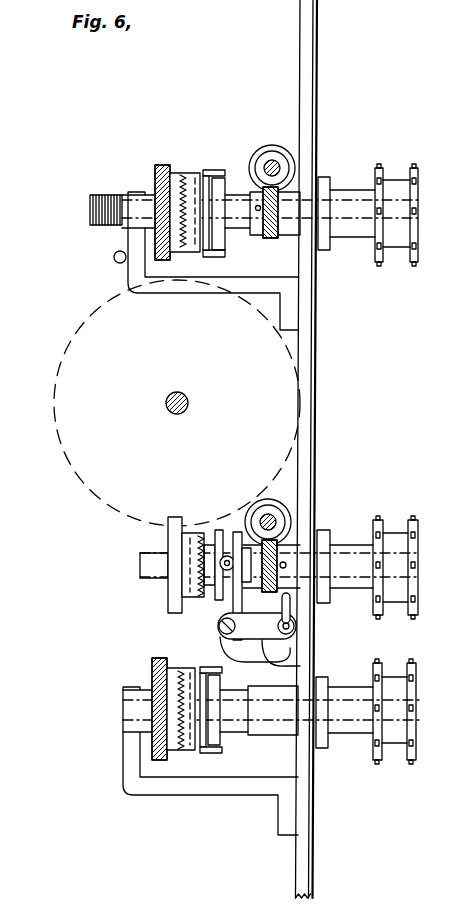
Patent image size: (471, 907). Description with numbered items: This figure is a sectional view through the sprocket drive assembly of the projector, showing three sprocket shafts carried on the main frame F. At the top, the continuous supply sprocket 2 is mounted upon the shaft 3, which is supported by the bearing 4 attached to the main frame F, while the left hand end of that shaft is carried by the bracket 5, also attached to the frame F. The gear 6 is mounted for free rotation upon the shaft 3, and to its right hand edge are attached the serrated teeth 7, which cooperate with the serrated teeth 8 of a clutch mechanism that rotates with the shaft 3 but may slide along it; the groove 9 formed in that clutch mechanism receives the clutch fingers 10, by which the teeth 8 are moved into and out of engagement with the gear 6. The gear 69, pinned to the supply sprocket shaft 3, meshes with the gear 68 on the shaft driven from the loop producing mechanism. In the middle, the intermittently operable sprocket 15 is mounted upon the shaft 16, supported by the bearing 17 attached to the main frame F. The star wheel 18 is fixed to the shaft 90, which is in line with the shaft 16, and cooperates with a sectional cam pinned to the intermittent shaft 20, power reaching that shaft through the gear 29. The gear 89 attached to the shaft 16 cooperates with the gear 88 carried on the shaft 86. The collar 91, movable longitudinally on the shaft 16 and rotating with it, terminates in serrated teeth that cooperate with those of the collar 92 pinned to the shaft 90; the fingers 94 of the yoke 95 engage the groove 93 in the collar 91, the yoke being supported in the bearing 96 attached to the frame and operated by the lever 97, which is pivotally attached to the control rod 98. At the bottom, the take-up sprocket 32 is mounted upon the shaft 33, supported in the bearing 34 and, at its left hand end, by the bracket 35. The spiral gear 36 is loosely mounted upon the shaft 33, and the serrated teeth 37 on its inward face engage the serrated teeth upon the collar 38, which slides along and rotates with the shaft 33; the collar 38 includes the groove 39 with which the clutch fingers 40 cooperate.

The main frame F is at (317, 33).
The continuous supply sprocket 2 is at (420, 178).
The shaft 3 is at (420, 216).
The bearing 4 is at (325, 178).
The bracket 5 is at (290, 310).
The gear 6 is at (157, 172).
The serrated teeth 7 is at (170, 175).
The serrated teeth 8 is at (190, 186).
The groove 9 is at (224, 190).
The clutch fingers 10 is at (212, 178).
The gear 68 is at (281, 150).
The gear 69 is at (270, 242).
The gear 29 is at (70, 425).
The intermittent shaft 20 is at (168, 412).
The star wheel 18 is at (168, 530).
The shaft 90 is at (140, 570).
The collar 92 is at (190, 534).
The groove 93 is at (216, 540).
The fingers 94 is at (222, 567).
The yoke 95 is at (221, 612).
The collar 91 is at (245, 548).
The gear 88 is at (268, 499).
The shaft 86 is at (270, 521).
The gear 89 is at (268, 594).
The bearing 96 is at (284, 643).
The lever 97 is at (286, 657).
The control rod 98 is at (291, 605).
The bearing 17 is at (330, 534).
The intermittently operable sprocket 15 is at (418, 548).
The shaft 16 is at (420, 566).
The bracket 35 is at (243, 796).
The bearing 34 is at (341, 690).
The spiral gear 36 is at (152, 665).
The serrated teeth 37 is at (172, 675).
The collar 38 is at (181, 680).
The clutch fingers 40 is at (205, 680).
The groove 39 is at (213, 690).
The take-up sprocket 32 is at (420, 728).
The shaft 33 is at (420, 712).